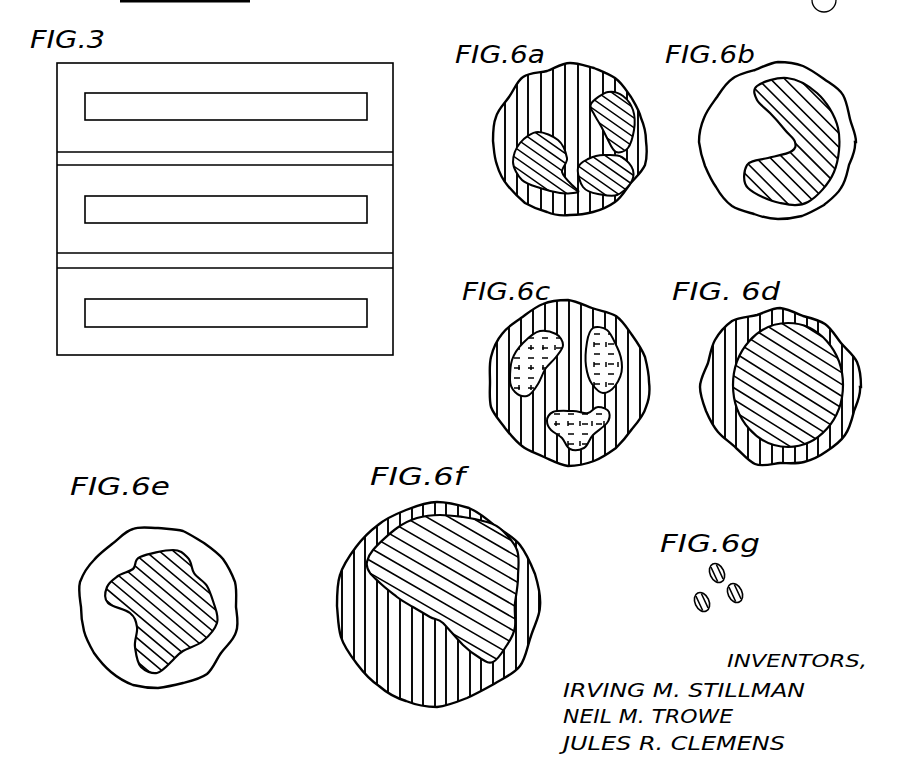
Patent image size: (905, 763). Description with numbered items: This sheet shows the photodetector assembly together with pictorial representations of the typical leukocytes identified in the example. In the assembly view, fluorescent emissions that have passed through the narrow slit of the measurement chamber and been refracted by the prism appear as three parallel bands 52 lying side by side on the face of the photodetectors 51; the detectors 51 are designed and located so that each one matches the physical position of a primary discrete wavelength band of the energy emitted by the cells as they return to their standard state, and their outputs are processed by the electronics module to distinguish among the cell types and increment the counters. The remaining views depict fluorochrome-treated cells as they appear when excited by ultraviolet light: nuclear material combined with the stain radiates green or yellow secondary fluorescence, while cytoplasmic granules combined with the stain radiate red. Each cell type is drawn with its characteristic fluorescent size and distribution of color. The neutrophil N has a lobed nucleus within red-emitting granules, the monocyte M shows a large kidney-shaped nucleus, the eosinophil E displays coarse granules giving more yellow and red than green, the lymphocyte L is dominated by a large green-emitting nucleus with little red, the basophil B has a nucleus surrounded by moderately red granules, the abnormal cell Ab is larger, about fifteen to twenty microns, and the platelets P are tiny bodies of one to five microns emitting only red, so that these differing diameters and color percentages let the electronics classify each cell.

In FIG. 3, the photodetectors 51 is at (326, 63).
In FIG. 3, the parallel bands 52 is at (361, 105).
In FIG. 6A, the neutrophil N is at (569, 152).
In FIG. 6B, the monocyte M is at (775, 145).
In FIG. 6C, the eosinophil E is at (570, 393).
In FIG. 6D, the lymphocyte L is at (781, 387).
In FIG. 6E, the basophil B is at (164, 613).
In FIG. 6F, the abnormal cell Ab is at (444, 591).
In FIG. 6G, the platelet P is at (718, 596).